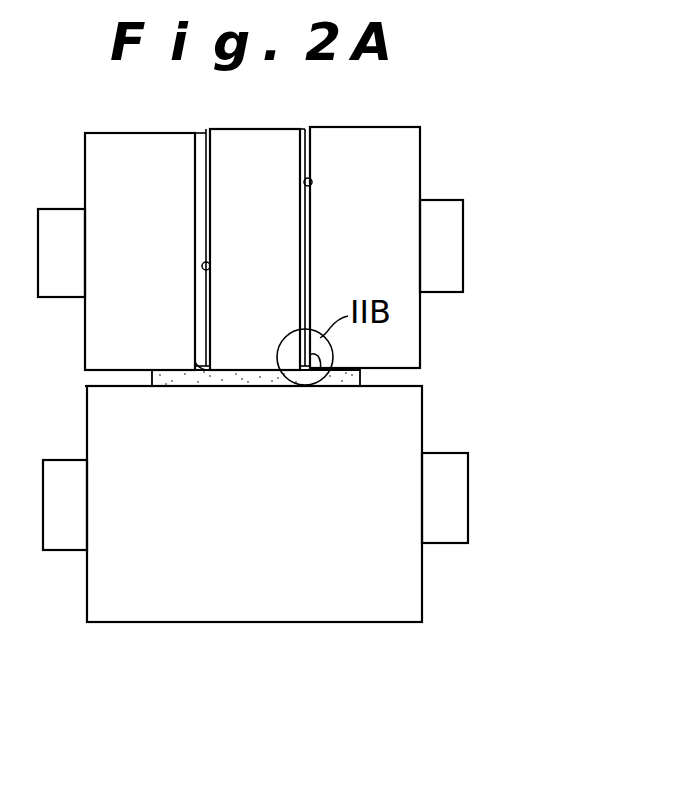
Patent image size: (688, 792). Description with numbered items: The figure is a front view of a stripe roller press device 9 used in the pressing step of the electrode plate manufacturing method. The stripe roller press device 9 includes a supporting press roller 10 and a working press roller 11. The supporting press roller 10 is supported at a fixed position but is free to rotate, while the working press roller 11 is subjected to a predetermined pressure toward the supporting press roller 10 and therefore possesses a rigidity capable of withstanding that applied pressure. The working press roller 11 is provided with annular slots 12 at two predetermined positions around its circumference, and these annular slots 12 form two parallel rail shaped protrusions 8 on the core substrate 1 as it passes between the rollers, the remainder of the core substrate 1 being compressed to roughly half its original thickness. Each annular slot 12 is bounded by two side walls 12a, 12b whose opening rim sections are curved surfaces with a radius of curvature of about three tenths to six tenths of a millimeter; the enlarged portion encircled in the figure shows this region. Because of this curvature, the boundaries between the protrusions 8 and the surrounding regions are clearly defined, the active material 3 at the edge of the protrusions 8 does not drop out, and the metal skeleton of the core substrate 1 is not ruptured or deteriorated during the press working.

The core substrate 1 is at (237, 388).
The active material 3 is at (180, 386).
The rail shaped protrusion 8 is at (198, 360).
The stripe roller press device 9 is at (280, 238).
The supporting press roller 10 is at (431, 561).
The working press roller 11 is at (397, 336).
The annular slot 12 is at (207, 326).
The side wall 12a is at (196, 190).
The side wall 12b is at (209, 268).